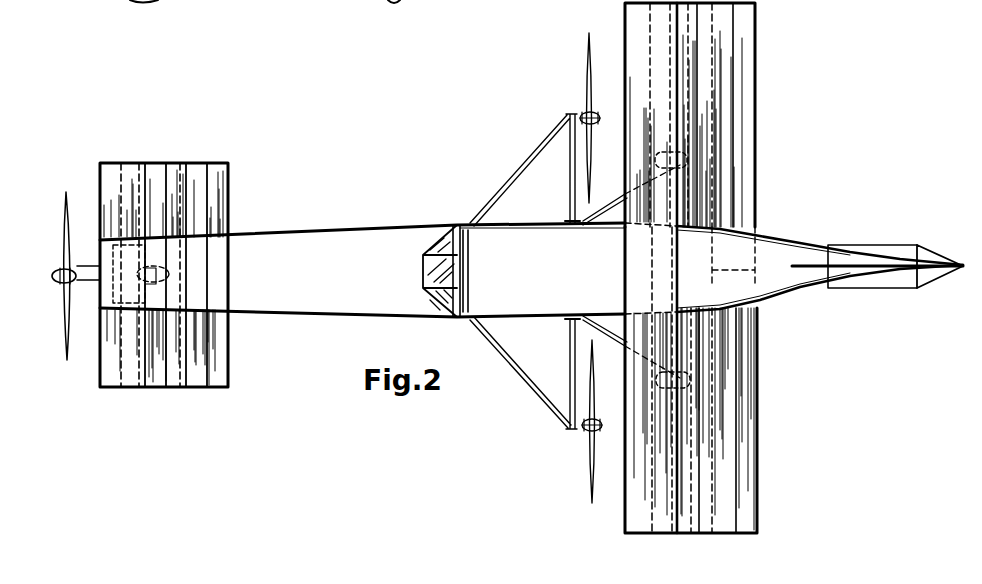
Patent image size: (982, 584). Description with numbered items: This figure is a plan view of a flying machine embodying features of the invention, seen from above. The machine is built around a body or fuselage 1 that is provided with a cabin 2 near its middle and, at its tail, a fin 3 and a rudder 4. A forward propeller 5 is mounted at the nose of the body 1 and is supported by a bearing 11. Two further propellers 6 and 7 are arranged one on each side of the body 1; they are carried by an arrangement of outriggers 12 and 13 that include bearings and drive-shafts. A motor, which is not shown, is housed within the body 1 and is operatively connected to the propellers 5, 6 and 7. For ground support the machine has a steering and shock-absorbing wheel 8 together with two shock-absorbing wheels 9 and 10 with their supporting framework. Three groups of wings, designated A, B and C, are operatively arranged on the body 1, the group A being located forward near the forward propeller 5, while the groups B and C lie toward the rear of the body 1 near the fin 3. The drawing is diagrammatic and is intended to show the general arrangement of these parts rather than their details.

The body or fuselage 1 is at (337, 241).
The cabin 2 is at (524, 271).
The fin 3 is at (817, 263).
The rudder 4 is at (930, 270).
The forward propeller 5 is at (66, 315).
The propeller 6 is at (591, 462).
The propeller 7 is at (586, 70).
The steering and shock-absorbing wheel 8 is at (160, 276).
The shock-absorbing wheel 9 is at (700, 379).
The shock-absorbing wheel 10 is at (700, 158).
The bearing 11 is at (92, 283).
The outrigger 12 is at (567, 114).
The outrigger 13 is at (571, 430).
The group of wings A is at (152, 155).
The group of wings B is at (762, 466).
The group of wings C is at (762, 76).